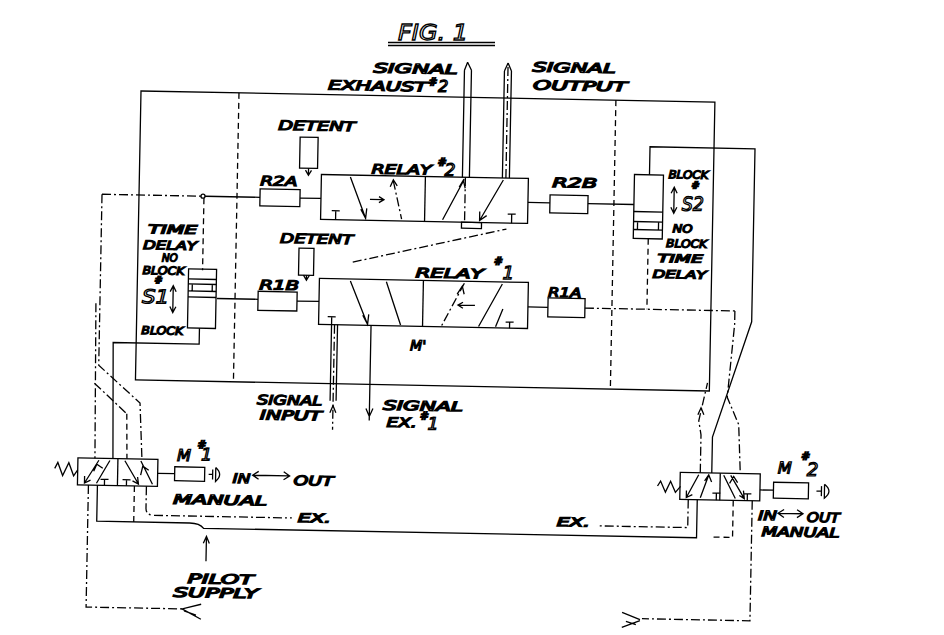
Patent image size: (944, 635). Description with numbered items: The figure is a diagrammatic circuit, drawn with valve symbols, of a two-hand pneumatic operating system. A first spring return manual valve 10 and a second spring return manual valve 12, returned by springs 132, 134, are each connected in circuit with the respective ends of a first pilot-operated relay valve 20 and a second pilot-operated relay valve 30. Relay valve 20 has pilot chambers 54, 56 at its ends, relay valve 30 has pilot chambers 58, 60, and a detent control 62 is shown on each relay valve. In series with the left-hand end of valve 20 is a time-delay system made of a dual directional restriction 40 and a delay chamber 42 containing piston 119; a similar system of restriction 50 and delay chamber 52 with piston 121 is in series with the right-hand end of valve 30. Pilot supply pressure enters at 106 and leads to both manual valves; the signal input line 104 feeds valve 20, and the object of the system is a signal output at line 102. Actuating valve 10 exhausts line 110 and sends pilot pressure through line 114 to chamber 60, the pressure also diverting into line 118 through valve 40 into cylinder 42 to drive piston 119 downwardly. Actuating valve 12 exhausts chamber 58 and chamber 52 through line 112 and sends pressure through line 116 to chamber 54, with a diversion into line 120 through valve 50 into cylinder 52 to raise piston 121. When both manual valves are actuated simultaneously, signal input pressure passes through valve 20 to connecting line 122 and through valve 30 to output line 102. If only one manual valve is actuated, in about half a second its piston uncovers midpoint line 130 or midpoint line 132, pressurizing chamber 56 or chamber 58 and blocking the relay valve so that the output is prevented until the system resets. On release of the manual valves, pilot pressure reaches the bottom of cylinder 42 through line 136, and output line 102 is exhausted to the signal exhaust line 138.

The first spring return manual valve 10 is at (158, 455).
The second spring return manual valve 12 is at (697, 462).
The first pilot-operated relay valve 20 is at (505, 302).
The second pilot-operated relay valve 30 is at (516, 185).
The dual directional restriction 40 is at (218, 252).
The delay chamber 42 is at (218, 320).
The dual directional restriction 50 is at (654, 258).
The delay chamber 52 is at (648, 165).
The pilot chamber 54 is at (567, 304).
The pilot chamber 56 is at (303, 312).
The pilot chamber 58 is at (567, 206).
The pilot chamber 60 is at (283, 204).
The detent control 62 is at (319, 152).
The signal output line 102 is at (513, 121).
The signal input line 104 is at (347, 394).
The pilot supply 106 is at (222, 556).
The line 110 is at (158, 414).
The line 112 is at (757, 300).
The line 114 is at (104, 303).
The line 116 is at (681, 302).
The line 118 is at (205, 212).
The piston 119 is at (217, 271).
The line 120 is at (653, 302).
The piston 121 is at (636, 207).
The connecting line 122 is at (418, 230).
The midpoint line 130 is at (251, 300).
The midpoint line 132 is at (603, 194).
The spring 134 is at (658, 478).
The line 136 is at (153, 343).
The signal exhaust line 138 is at (464, 126).